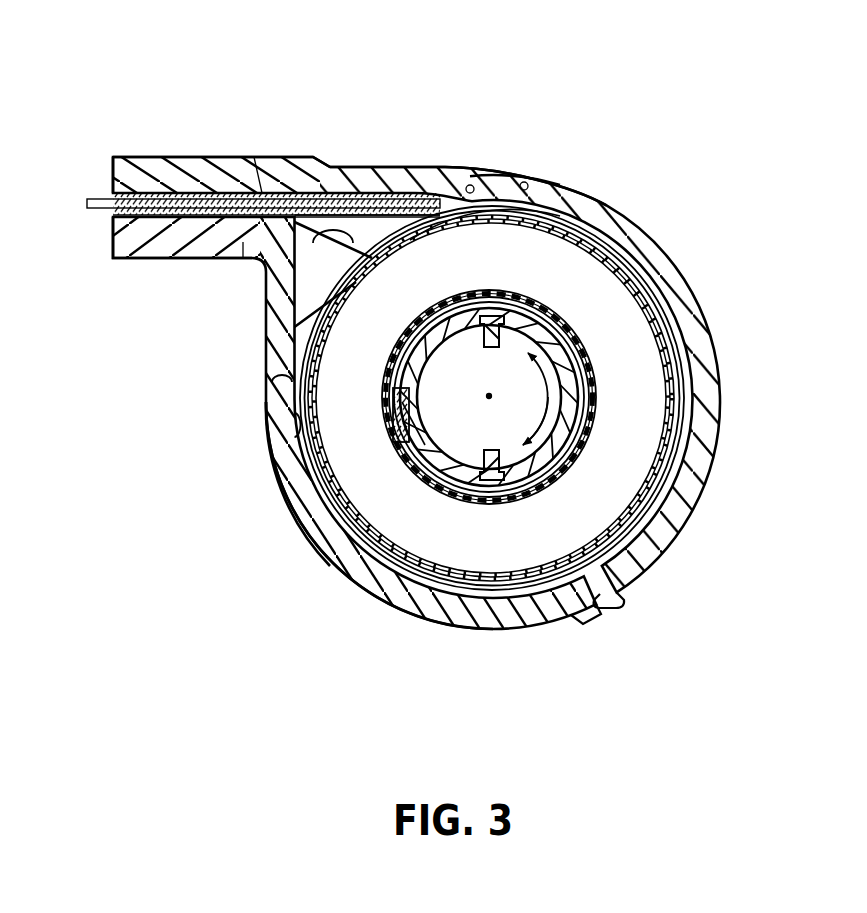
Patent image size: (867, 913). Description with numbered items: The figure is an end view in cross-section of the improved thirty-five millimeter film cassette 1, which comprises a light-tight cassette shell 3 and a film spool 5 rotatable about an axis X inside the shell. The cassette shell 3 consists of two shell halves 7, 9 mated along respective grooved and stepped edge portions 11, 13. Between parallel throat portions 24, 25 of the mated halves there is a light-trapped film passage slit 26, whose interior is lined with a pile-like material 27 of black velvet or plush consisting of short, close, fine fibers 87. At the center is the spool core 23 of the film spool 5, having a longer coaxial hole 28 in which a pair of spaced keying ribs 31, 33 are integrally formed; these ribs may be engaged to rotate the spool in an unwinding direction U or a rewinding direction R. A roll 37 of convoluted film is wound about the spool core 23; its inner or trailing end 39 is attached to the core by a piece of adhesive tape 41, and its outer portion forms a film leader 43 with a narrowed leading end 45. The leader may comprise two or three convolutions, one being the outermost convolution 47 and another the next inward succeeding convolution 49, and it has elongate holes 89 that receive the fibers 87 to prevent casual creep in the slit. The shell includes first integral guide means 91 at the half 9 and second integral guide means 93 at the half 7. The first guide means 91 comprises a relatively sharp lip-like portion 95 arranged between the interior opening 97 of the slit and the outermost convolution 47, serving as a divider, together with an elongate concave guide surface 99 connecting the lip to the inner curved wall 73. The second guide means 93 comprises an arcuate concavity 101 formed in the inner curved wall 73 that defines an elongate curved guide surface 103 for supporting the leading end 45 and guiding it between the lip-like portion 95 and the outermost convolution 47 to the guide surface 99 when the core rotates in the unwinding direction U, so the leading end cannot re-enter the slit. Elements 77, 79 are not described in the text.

The film cassette 1 is at (238, 144).
The cassette shell 3 is at (500, 636).
The film spool 5 is at (688, 372).
The shell half 7 is at (440, 166).
The shell half 9 is at (432, 627).
The grooved and stepped edge portion 11 is at (593, 625).
The grooved and stepped edge portion 13 is at (600, 586).
The spool core 23 is at (592, 408).
The throat portion 24 is at (146, 156).
The throat portion 25 is at (126, 259).
The film passage slit 26 is at (112, 196).
The pile-like material 27 is at (275, 157).
The longer coaxial hole 28 is at (553, 320).
The keying rib 31 is at (475, 341).
The keying rib 33 is at (475, 465).
The film roll 37 is at (328, 517).
The trailing end 39 is at (388, 432).
The adhesive tape 41 is at (389, 400).
The film leader 43 is at (397, 205).
The leading end 45 is at (104, 203).
The outermost convolution 47 is at (602, 247).
The next inward succeeding convolution 49 is at (634, 280).
The inner curved wall 73 is at (296, 428).
The bushing 77 is at (292, 386).
The stator inner ring 79 is at (352, 283).
The fibers 87 is at (243, 242).
The elongate holes 89 is at (177, 192).
The first guide means 91 is at (350, 236).
The second guide means 93 is at (504, 166).
The lip-like portion 95 is at (410, 240).
The interior opening 97 is at (411, 212).
The concave guide surface 99 is at (360, 282).
The arcuate concavity 101 is at (471, 185).
The curved guide surface 103 is at (527, 183).
The axis X is at (486, 396).
The unwinding direction U is at (522, 346).
The rewinding direction R is at (518, 444).